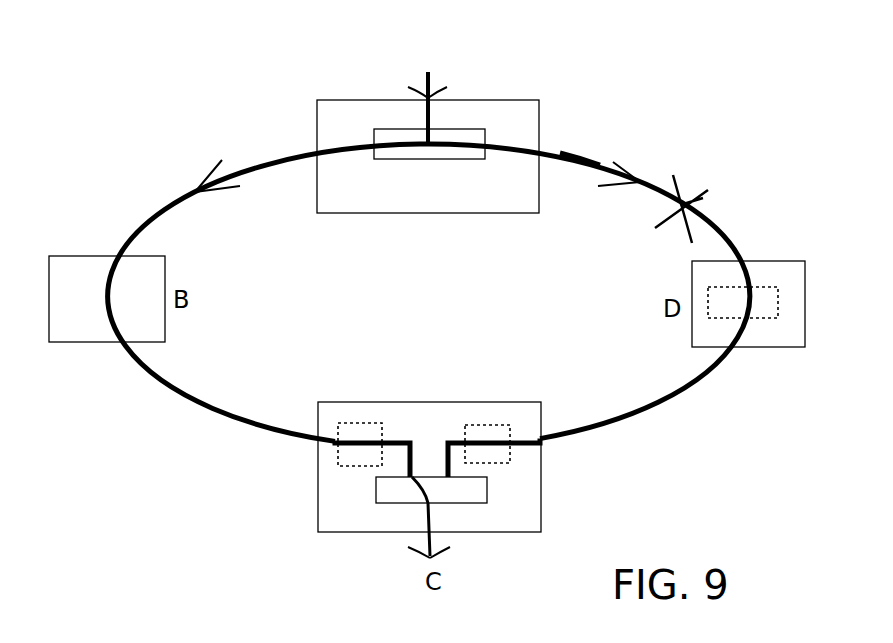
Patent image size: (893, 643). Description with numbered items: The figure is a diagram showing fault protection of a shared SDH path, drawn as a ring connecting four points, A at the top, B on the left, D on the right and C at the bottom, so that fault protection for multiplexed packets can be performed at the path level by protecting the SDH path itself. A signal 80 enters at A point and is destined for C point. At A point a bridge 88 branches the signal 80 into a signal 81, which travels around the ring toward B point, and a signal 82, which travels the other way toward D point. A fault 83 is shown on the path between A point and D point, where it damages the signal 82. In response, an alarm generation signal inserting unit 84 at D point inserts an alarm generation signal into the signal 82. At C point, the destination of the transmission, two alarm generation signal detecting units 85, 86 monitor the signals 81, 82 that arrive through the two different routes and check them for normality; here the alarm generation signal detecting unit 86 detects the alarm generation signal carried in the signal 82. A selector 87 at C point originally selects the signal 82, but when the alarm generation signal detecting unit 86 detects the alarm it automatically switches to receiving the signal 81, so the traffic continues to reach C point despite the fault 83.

The signal 80 is at (430, 77).
The signal 81 is at (270, 163).
The signal 82 is at (577, 163).
The fault 83 is at (693, 187).
The alarm generation signal inserting unit 84 is at (762, 287).
The alarm generation signal detecting unit 85 is at (357, 423).
The alarm generation signal detecting unit 86 is at (480, 423).
The selector 87 is at (483, 488).
The bridge 88 is at (462, 155).